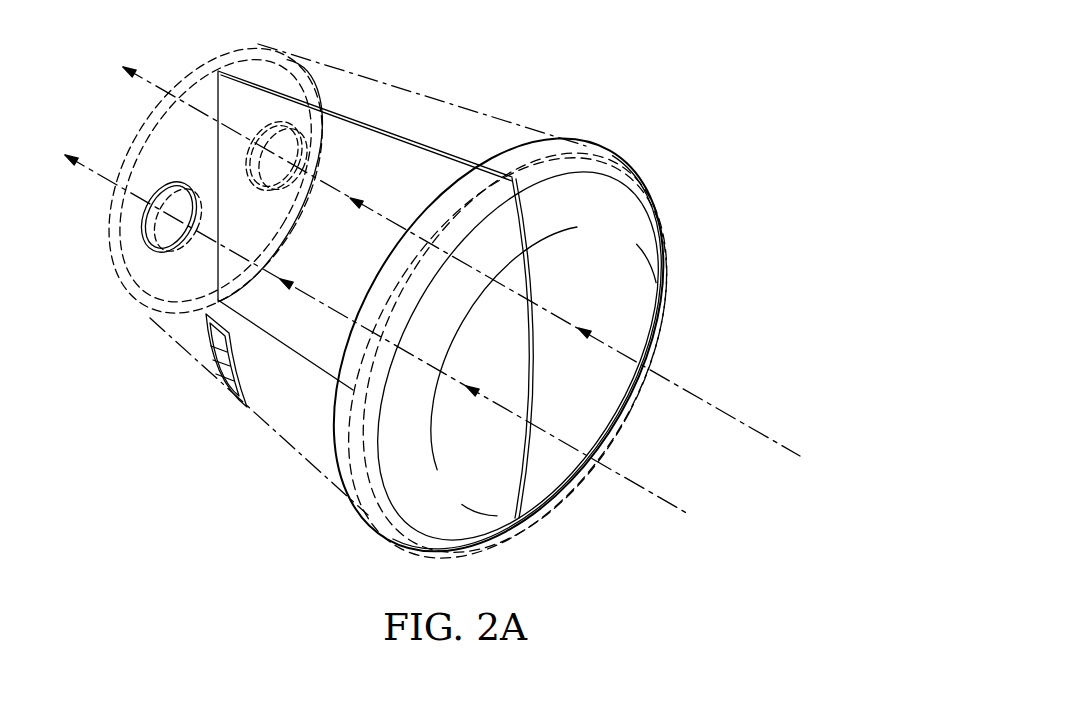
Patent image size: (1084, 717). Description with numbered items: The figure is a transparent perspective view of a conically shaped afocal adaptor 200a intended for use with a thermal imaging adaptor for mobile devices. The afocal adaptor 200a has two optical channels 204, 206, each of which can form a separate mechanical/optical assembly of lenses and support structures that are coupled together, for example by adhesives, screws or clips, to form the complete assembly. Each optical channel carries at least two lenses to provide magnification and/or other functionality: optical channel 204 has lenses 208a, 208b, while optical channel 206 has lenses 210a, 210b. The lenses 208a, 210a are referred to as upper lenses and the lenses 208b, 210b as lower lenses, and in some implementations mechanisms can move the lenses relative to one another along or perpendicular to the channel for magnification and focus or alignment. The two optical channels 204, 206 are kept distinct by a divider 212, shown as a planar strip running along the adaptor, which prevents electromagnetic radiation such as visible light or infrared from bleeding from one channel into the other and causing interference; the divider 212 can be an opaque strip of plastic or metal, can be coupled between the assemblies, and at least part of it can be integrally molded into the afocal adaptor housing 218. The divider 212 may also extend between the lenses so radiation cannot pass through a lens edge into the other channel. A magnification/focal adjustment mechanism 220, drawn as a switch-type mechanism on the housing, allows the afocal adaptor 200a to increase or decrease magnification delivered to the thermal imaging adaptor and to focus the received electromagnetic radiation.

The afocal adaptor 200a is at (398, 312).
The optical channel 204 is at (320, 300).
The optical channel 206 is at (387, 216).
The lens 208a is at (466, 524).
The lens 208b is at (179, 250).
The lens 210a is at (603, 413).
The lens 210b is at (300, 213).
The divider 212 is at (352, 116).
The afocal adaptor housing 218 is at (487, 111).
The magnification/focal adjustment mechanism 220 is at (223, 387).